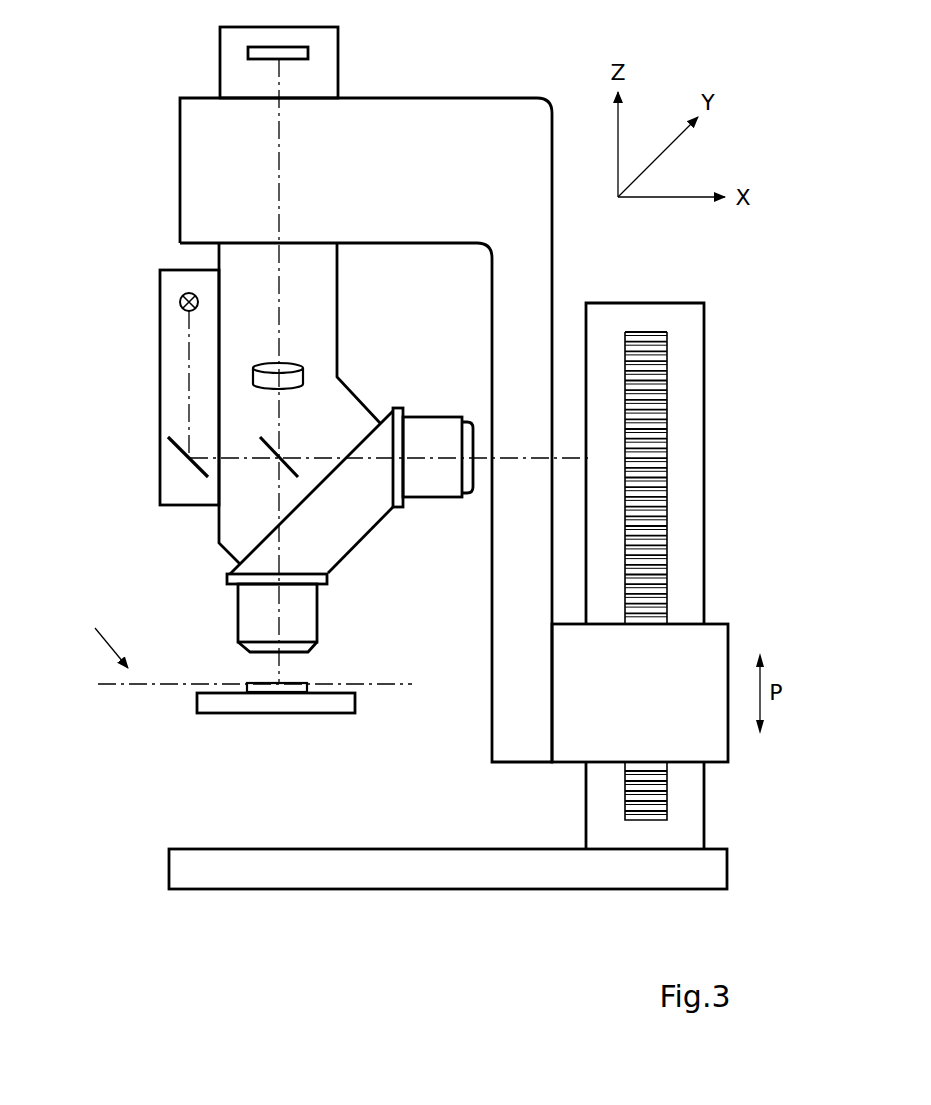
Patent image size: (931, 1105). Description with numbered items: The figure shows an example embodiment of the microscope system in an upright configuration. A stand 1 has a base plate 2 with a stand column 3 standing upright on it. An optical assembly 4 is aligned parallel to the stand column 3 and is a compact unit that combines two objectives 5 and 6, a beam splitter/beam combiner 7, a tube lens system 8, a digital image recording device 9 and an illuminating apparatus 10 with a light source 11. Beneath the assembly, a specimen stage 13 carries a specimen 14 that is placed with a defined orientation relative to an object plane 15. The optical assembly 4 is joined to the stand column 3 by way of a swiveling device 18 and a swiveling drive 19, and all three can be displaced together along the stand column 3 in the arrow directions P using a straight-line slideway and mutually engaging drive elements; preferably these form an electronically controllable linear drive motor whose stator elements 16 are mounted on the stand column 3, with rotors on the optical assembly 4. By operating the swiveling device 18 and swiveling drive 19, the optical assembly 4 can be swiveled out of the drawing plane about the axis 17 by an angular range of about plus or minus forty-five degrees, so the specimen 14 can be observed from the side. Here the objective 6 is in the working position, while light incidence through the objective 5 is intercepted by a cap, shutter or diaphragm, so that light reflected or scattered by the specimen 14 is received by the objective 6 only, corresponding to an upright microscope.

The stand 1 is at (699, 571).
The base plate 2 is at (285, 863).
The stand column 3 is at (690, 417).
The optical assembly 4 is at (357, 350).
The objective 5 is at (432, 430).
The objective 6 is at (307, 615).
The beam splitter/beam combiner 7 is at (285, 467).
The tube lens system 8 is at (288, 372).
The digital image recording device 9 is at (257, 53).
The illuminating apparatus 10 is at (173, 480).
The light source 11 is at (180, 307).
The specimen stage 13 is at (300, 708).
The specimen 14 is at (257, 683).
The object plane 15 is at (93, 634).
The stator elements 16 is at (655, 557).
The axis 17 is at (392, 680).
The swiveling device 18 is at (450, 113).
The swiveling drive 19 is at (702, 743).